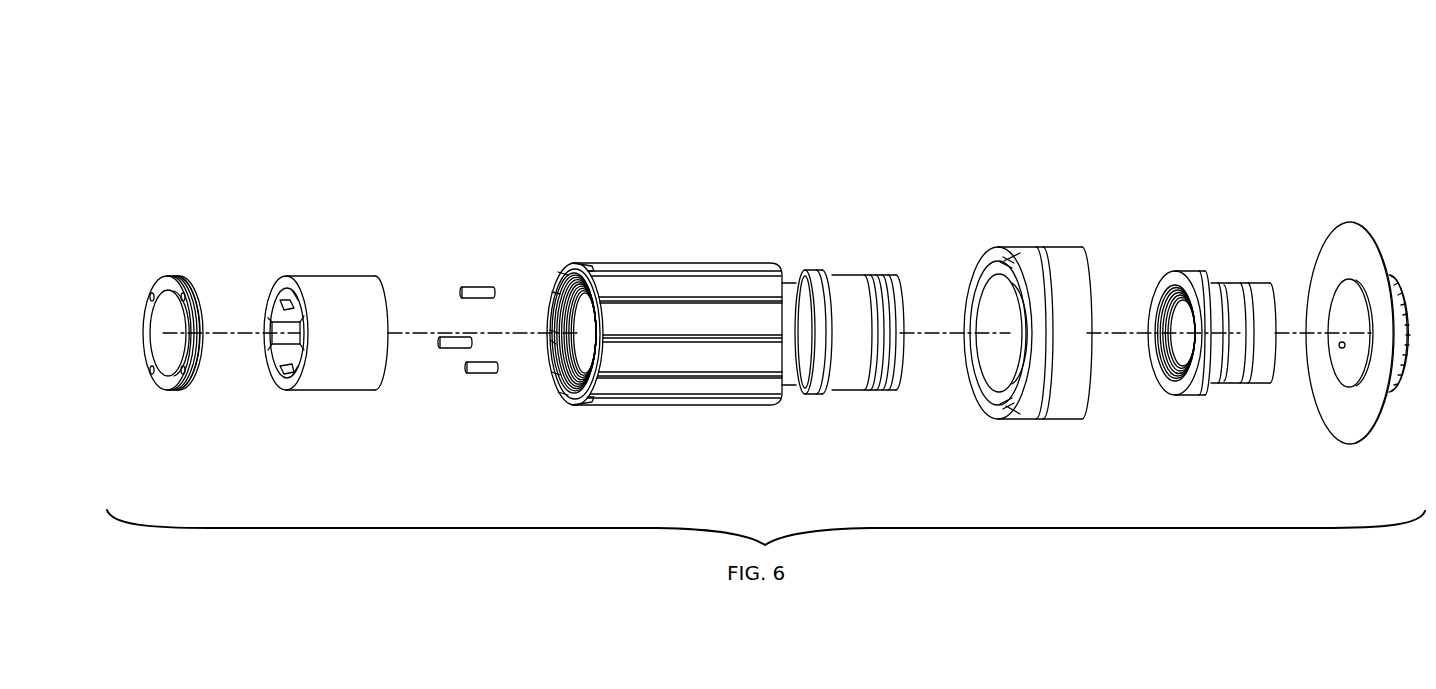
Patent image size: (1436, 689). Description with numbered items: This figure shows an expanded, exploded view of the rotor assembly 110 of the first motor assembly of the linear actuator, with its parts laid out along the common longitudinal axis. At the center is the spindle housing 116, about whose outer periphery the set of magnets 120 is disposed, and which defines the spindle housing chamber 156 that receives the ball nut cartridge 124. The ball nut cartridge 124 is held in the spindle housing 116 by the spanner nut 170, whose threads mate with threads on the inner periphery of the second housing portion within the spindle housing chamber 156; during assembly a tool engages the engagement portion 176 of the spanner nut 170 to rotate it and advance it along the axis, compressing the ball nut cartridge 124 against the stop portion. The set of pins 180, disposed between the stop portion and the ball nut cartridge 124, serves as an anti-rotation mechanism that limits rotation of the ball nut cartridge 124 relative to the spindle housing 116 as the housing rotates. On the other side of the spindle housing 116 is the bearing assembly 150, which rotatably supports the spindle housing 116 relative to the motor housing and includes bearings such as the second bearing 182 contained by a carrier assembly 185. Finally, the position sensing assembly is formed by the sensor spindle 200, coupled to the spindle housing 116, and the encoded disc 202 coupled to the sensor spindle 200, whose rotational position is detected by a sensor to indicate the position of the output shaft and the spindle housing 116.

The rotor assembly 110 is at (715, 238).
The spindle housing 116 is at (808, 403).
The set of magnets 120 is at (656, 262).
The ball nut cartridge 124 is at (326, 277).
The bearing assembly 150 is at (1044, 247).
The spindle housing chamber 156 is at (544, 373).
The spanner nut 170 is at (178, 281).
The engagement portion 176 is at (180, 377).
The set of pins 180 is at (470, 287).
The second bearing 182 is at (1014, 420).
The carrier assembly 185 is at (1226, 283).
The sensor spindle 200 is at (1250, 383).
The encoded disc 202 is at (1352, 222).